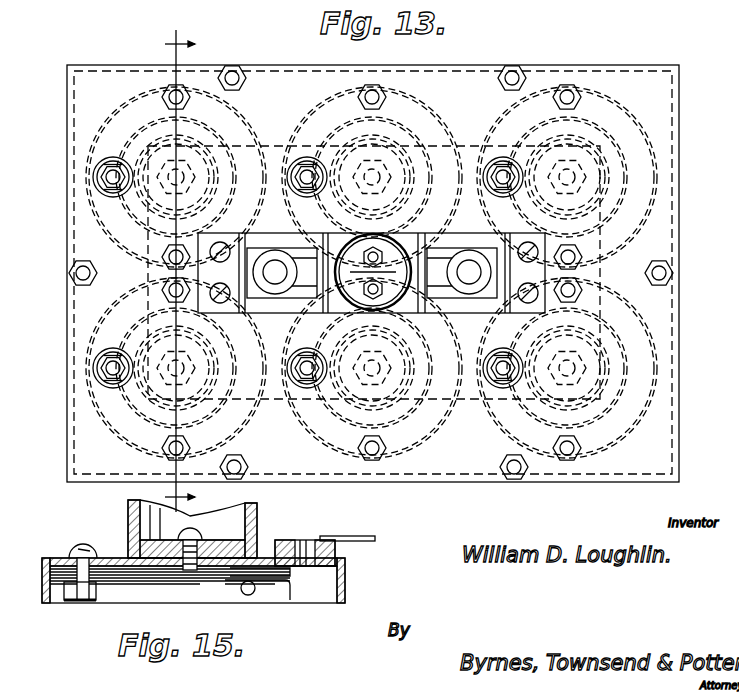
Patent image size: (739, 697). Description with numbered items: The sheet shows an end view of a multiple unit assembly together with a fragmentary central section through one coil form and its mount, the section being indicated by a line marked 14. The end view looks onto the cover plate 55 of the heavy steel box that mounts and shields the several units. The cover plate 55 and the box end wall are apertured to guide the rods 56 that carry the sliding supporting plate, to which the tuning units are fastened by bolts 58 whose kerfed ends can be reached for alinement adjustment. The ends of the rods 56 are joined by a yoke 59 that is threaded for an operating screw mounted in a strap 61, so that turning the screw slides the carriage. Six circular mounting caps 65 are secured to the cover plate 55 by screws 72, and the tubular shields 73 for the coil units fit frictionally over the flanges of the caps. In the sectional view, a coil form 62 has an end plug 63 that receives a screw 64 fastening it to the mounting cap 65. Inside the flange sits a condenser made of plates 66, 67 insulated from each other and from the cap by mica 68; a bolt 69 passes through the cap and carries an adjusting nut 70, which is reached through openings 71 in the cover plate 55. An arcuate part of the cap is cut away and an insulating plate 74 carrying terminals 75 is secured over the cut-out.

In FIG. 13, the section line 14- 14 is at (196, 271).
In FIG. 13, the cover plate 55 is at (156, 66).
In FIG. 15, the cover plate 55 is at (193, 580).
In FIG. 13, the rods 56 is at (468, 284).
In FIG. 13, the bolts 58 is at (280, 284).
In FIG. 13, the yoke 59 is at (446, 268).
In FIG. 13, the strap 61 is at (296, 238).
In FIG. 13, the coil form 62 is at (360, 303).
In FIG. 15, the coil form 62 is at (257, 512).
In FIG. 15, the end plug 63 is at (140, 535).
In FIG. 15, the screw 64 is at (198, 535).
In FIG. 15, the mounting cap 65 is at (340, 585).
In FIG. 15, the condenser plate 66 is at (292, 584).
In FIG. 15, the condenser plate 67 is at (282, 580).
In FIG. 15, the mica 68 is at (176, 575).
In FIG. 15, the bolt 69 is at (80, 545).
In FIG. 13, the adjusting nut 70 is at (108, 178).
In FIG. 15, the adjusting nut 70 is at (82, 594).
In FIG. 13, the openings 71 is at (100, 188).
In FIG. 13, the screws 72 is at (570, 88).
In FIG. 13, the tubular shield 73 is at (627, 108).
In FIG. 15, the insulating plate 74 is at (336, 552).
In FIG. 15, the terminals 75 is at (355, 536).